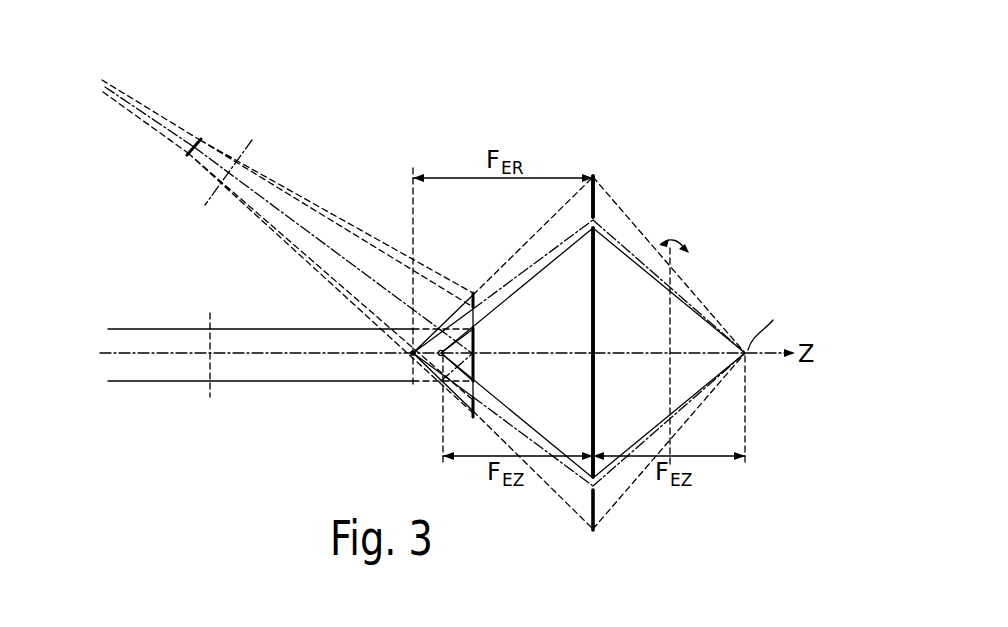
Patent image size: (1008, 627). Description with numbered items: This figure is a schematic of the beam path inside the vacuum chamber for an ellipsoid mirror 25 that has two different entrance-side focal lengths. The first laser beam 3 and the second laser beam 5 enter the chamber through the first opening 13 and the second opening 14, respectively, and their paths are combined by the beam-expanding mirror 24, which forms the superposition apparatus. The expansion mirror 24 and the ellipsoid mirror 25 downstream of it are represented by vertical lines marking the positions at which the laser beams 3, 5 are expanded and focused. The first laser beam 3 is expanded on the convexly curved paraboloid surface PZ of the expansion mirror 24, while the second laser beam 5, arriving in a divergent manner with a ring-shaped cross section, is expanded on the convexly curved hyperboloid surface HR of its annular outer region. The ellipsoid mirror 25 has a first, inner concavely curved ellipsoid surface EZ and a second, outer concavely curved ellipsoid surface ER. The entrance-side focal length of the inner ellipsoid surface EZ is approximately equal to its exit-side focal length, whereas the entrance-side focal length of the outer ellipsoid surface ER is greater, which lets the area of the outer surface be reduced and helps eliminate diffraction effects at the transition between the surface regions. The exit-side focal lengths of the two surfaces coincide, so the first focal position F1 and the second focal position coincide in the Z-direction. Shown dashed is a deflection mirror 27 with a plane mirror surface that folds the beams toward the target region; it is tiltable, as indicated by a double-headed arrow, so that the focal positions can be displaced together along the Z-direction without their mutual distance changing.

The first laser beam 3 is at (138, 372).
The second laser beam 5 is at (322, 207).
The first opening 13 is at (210, 390).
The second opening 14 is at (243, 152).
The beam-expanding mirror 24 is at (461, 486).
The ellipsoid mirror 25 is at (596, 546).
The deflection mirror 27 is at (690, 305).
The hyperboloid surface HR is at (464, 290).
The outer ellipsoid surface ER is at (594, 202).
The inner ellipsoid surface EZ is at (594, 322).
The paraboloid surface PZ is at (447, 386).
The first focal position F1 is at (774, 324).